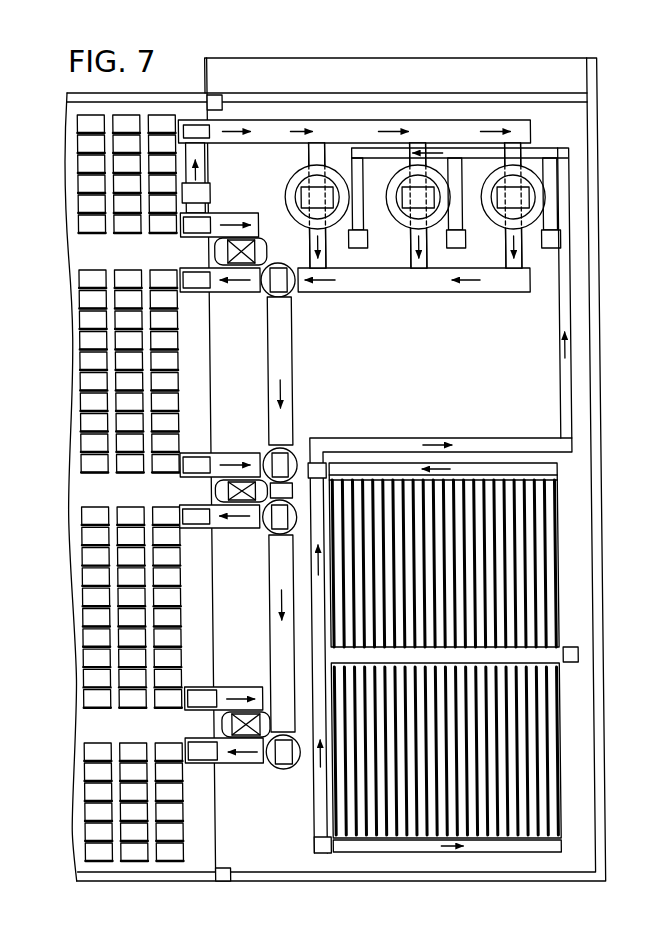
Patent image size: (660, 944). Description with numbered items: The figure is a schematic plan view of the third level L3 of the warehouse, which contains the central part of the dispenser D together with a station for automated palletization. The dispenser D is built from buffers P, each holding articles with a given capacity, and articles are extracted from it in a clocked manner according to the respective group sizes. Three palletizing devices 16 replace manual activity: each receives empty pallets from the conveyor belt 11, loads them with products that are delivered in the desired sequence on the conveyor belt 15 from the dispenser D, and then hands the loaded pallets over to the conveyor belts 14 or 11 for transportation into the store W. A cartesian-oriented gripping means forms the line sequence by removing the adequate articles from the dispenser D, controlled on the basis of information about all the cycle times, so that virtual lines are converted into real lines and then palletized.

The conveyor belt 11 is at (330, 125).
The conveyor belt 14 is at (425, 293).
The conveyor belt 15 is at (541, 150).
The palletizing device 16 is at (283, 193).
The store W is at (182, 388).
The buffer P is at (550, 553).
The dispenser D is at (549, 745).
The third level L3 is at (654, 365).